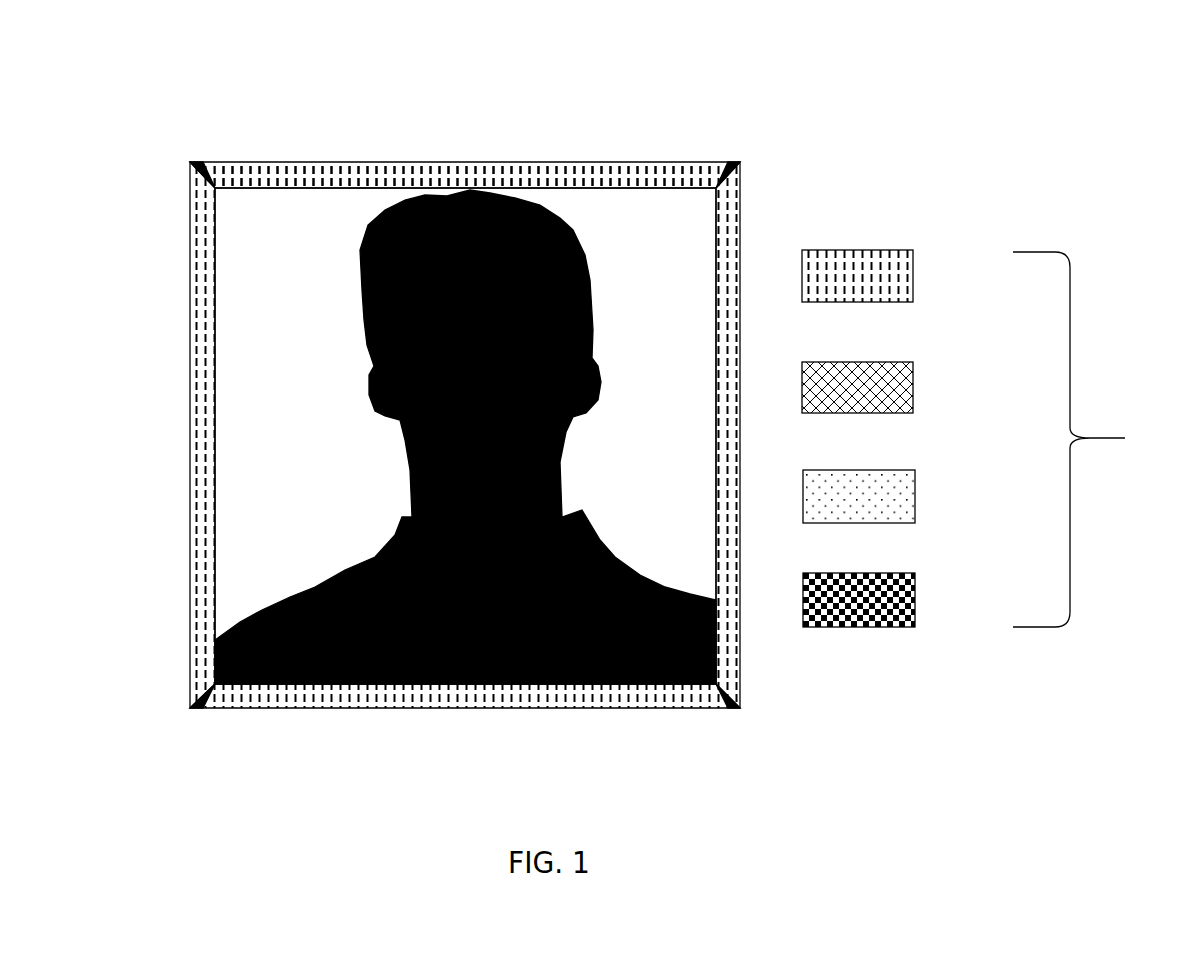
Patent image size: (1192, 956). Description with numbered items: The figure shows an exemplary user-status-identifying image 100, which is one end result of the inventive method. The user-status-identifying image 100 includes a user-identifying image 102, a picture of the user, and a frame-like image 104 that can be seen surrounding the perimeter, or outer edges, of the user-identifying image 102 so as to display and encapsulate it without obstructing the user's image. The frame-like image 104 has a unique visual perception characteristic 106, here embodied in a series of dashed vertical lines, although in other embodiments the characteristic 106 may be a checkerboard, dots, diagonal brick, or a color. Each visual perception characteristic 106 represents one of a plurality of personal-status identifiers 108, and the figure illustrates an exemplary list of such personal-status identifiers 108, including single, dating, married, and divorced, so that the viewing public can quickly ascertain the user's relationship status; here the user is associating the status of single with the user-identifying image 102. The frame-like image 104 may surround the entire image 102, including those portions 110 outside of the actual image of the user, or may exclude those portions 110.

The user-status-identifying image 100 is at (385, 433).
The user-identifying image 102 is at (503, 205).
The frame-like image 104 is at (188, 240).
The visual perception characteristic 106 is at (667, 163).
The personal-status identifiers 108 is at (985, 438).
The portions outside of the image 110 is at (312, 503).